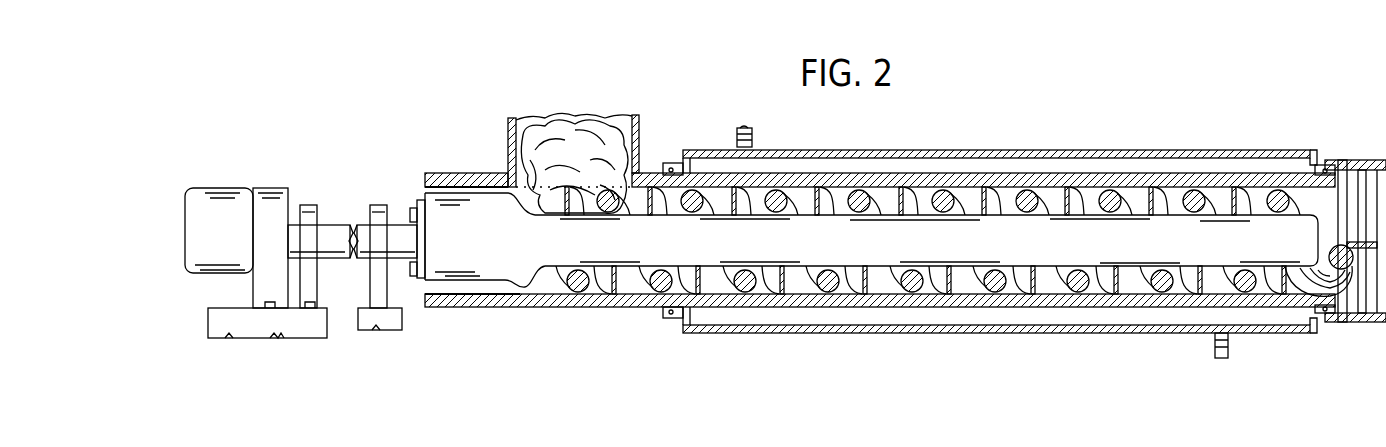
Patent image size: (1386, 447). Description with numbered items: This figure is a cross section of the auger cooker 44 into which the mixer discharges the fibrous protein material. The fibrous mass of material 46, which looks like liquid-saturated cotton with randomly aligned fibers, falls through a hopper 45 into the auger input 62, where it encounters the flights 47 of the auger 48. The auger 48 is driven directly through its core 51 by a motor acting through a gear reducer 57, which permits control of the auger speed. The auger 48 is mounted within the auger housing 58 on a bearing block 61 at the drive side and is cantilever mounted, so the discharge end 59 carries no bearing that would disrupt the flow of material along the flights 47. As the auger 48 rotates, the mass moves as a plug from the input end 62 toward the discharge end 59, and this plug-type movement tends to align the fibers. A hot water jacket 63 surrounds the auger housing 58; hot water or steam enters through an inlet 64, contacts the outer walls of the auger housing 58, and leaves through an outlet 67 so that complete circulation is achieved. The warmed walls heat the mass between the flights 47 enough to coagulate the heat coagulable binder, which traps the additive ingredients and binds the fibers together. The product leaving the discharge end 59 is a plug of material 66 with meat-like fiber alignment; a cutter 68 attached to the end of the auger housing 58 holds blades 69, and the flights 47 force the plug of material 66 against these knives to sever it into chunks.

The auger cooker 44 is at (845, 146).
The feed hopper 45 is at (640, 128).
The fibrous mass of material 46 is at (567, 150).
The flights 47 is at (222, 188).
The auger 48 is at (503, 248).
The core 51 is at (554, 240).
The gear reducer 57 is at (277, 205).
The auger housing 58 is at (986, 177).
The discharge end 59 is at (1310, 205).
The bearing block 61 is at (468, 296).
The auger input 62 is at (558, 204).
The hot water jacket 63 is at (1158, 151).
The inlet 64 is at (737, 133).
The plug of material 66 is at (1343, 292).
The outlet 67 is at (1222, 381).
The cutter 68 is at (1345, 157).
The blades 69 is at (1367, 300).